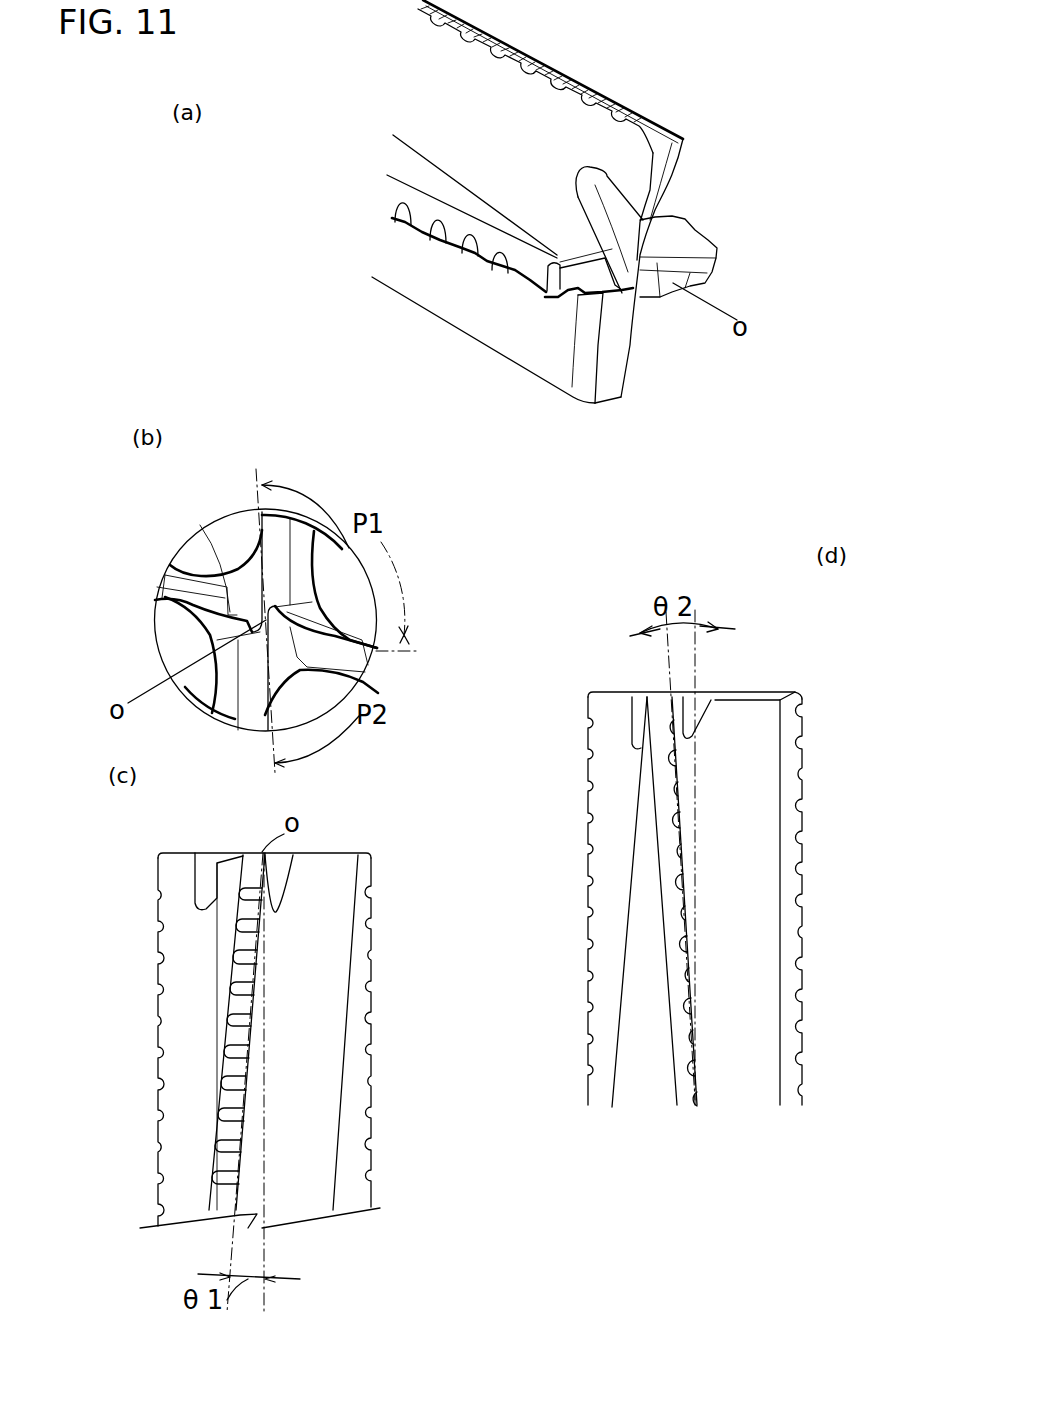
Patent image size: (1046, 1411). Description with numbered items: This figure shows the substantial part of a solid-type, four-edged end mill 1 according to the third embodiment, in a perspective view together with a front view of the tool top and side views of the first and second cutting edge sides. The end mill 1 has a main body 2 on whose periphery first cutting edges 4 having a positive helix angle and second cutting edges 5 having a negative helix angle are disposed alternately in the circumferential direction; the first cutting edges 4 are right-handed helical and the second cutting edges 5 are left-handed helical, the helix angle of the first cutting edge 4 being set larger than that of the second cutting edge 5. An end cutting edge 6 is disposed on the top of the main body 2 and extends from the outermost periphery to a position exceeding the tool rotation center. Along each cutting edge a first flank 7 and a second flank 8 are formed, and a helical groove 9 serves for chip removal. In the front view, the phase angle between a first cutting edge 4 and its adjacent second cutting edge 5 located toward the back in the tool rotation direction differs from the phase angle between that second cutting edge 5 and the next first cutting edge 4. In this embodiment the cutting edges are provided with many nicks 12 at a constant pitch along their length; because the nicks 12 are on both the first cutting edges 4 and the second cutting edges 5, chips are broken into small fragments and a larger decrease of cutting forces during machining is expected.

The end mill 1 is at (605, 62).
The main body 2 is at (513, 36).
The first cutting edge 4 is at (577, 92).
The second cutting edge 5 is at (712, 238).
The end cutting edge 6 is at (645, 218).
The first flank 7 is at (632, 108).
The second flank 8 is at (667, 127).
The helical groove 9 is at (500, 127).
The nick 12 is at (602, 108).